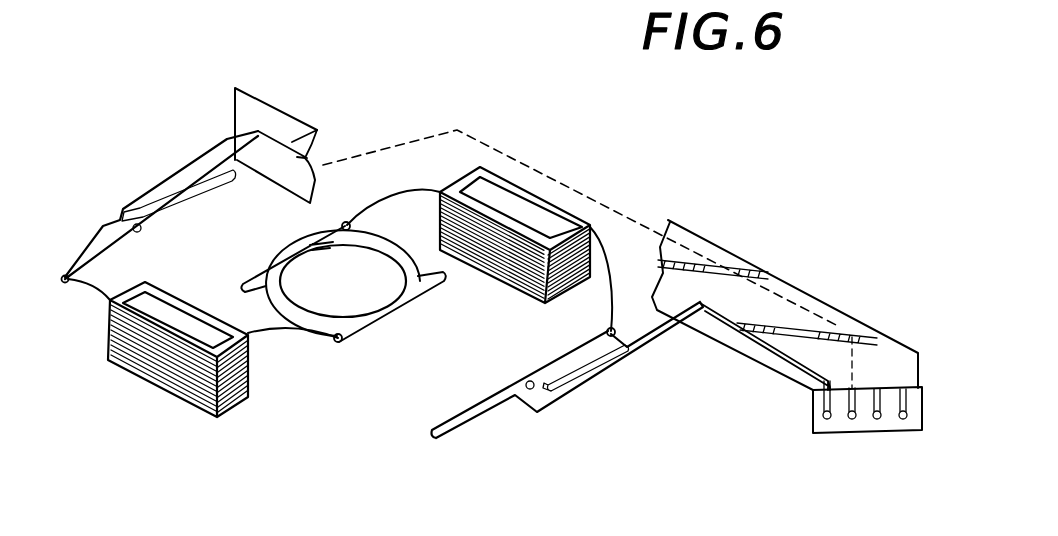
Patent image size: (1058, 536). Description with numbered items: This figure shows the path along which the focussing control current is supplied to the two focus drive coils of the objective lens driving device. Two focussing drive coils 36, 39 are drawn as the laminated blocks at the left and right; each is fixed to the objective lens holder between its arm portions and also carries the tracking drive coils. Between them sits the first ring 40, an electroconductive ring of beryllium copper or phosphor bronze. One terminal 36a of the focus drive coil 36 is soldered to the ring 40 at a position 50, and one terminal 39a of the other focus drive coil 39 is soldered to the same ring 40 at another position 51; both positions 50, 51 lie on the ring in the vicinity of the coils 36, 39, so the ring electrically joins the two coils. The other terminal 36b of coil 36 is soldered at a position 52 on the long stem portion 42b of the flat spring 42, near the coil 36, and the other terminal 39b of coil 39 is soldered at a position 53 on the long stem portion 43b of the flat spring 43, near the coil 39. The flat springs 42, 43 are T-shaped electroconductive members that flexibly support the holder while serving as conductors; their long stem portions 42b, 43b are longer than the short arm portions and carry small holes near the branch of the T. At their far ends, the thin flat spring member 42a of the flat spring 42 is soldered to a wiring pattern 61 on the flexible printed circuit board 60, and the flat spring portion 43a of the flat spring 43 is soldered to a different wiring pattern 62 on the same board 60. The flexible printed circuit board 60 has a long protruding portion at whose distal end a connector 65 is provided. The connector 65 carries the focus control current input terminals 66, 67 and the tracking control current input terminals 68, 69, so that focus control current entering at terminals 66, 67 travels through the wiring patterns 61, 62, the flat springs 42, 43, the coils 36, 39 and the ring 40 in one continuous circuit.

The focussing drive coil 36 is at (175, 397).
The terminal of focus drive coil 36a is at (290, 330).
The other terminal of focus drive coil 36b is at (93, 292).
The focussing drive coil 39 is at (502, 292).
The terminal of focus drive coil 39a is at (374, 203).
The other terminal of focus drive coil 39b is at (612, 325).
The first ring 40 is at (400, 308).
The flat spring 42 is at (137, 189).
The first flat spring member 42a is at (178, 170).
The long stem portion 42b is at (98, 257).
The flat spring 43 is at (603, 383).
The flat spring portion 43a is at (642, 350).
The long stem portion 43b is at (562, 353).
The soldering position 50 is at (342, 343).
The soldering position 51 is at (342, 225).
The soldering position 52 is at (64, 277).
The soldering position 53 is at (606, 330).
The flexible printed circuit board 60 is at (272, 112).
The wiring pattern 61 is at (298, 130).
The wiring pattern 62 is at (765, 353).
The connector 65 is at (923, 410).
The focus control current input terminal 66 is at (850, 433).
The focus control current input terminal 67 is at (827, 433).
The tracking control current input terminal 68 is at (877, 433).
The tracking control current input terminal 69 is at (903, 433).